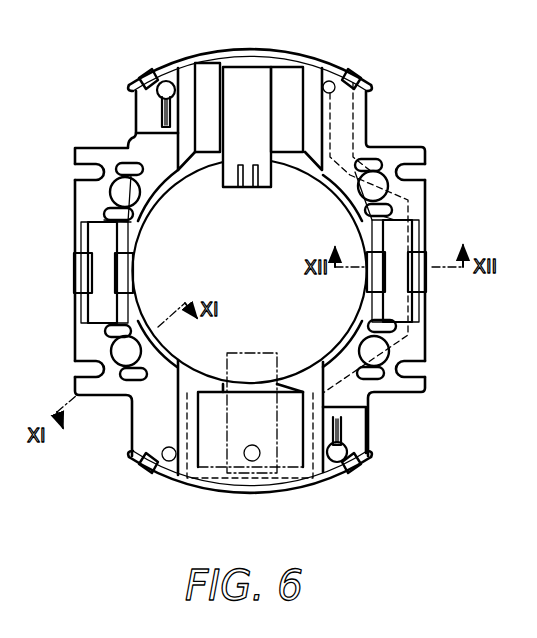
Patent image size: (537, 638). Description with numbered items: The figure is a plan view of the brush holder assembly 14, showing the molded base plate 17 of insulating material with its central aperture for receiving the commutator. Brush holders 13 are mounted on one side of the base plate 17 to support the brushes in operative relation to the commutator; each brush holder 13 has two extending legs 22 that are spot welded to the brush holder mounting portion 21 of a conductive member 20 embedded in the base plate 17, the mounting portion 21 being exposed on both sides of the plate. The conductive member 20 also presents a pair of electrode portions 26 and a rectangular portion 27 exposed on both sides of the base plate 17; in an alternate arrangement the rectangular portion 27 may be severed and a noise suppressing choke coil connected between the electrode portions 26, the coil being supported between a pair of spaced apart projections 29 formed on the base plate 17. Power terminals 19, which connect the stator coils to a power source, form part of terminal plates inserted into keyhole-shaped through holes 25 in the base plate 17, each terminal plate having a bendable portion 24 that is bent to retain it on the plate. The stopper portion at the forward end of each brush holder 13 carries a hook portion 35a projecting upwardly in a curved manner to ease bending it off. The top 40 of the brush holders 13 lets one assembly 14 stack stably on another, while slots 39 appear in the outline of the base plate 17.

The brush holder 13 is at (257, 74).
The brush holder assembly 14 is at (370, 403).
The base plate 17 is at (153, 430).
The power terminal 19 is at (150, 76).
The conductive member 20 is at (432, 323).
The brush holder mounting portion 21 is at (215, 455).
The extending leg 22 is at (208, 82).
The bendable portion 24 is at (160, 121).
The keyhole-shaped through hole 25 is at (157, 97).
The electrode portion 26 is at (377, 182).
The rectangular portion 27 is at (100, 283).
The projection 29 is at (117, 263).
The hook portion 35a is at (247, 183).
The slot 39 is at (413, 175).
The top of the brush holder 40 is at (278, 93).